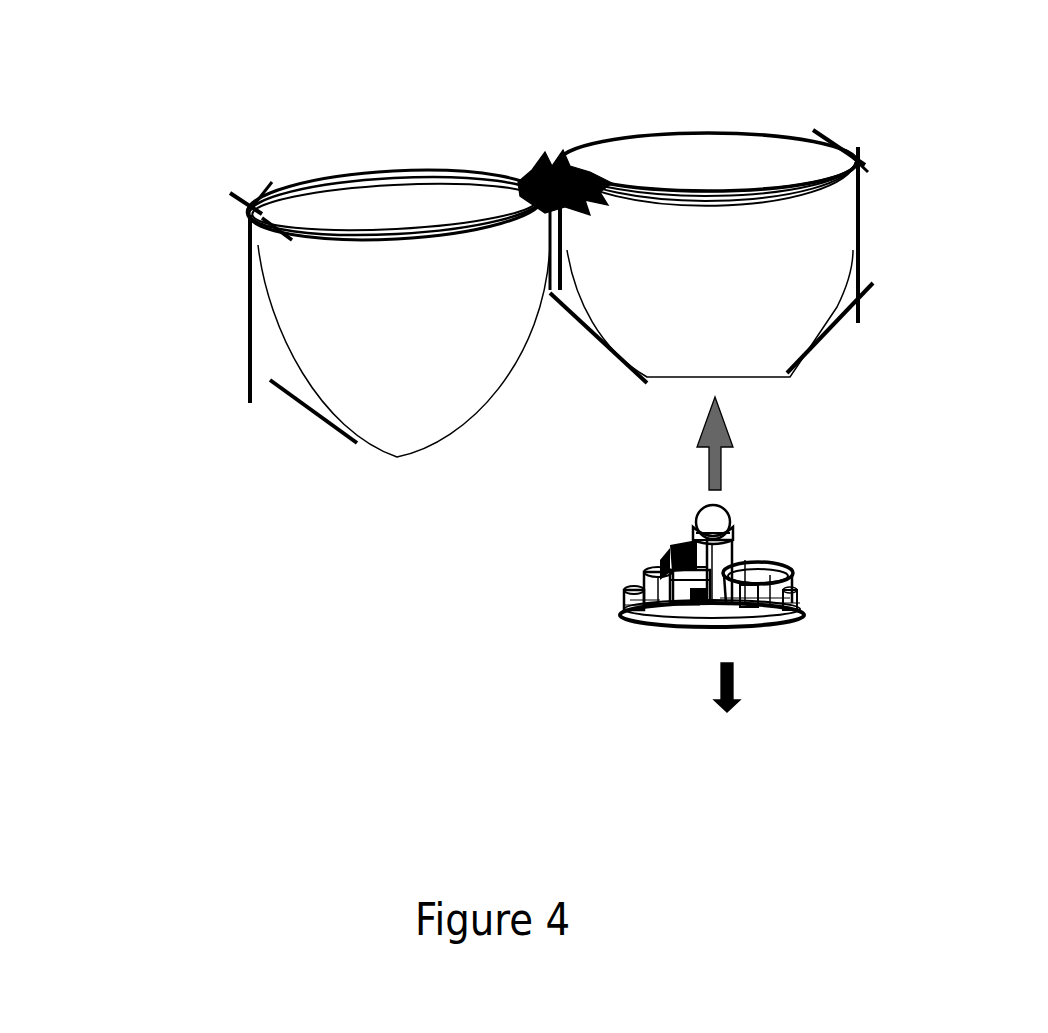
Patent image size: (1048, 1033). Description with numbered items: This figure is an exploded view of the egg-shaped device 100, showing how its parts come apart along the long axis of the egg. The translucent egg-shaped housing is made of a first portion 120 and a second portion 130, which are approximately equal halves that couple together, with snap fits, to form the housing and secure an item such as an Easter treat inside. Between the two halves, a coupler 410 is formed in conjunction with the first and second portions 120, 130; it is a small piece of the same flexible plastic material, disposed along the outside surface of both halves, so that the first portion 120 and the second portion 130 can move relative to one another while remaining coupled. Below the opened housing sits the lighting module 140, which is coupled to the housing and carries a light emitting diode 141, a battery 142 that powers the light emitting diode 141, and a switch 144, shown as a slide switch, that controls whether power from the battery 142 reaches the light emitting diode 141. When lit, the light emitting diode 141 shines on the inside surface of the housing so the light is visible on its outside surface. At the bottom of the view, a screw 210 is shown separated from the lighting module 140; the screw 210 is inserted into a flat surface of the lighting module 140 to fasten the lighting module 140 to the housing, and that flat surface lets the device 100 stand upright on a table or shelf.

The egg-shaped device 100 is at (246, 72).
The first portion 120 is at (310, 327).
The second portion 130 is at (677, 287).
The lighting module 140 is at (690, 547).
The light emitting diode 141 is at (733, 523).
The battery 142 is at (793, 570).
The switch 144 is at (690, 575).
The screw 210 is at (737, 695).
The coupler 410 is at (530, 177).